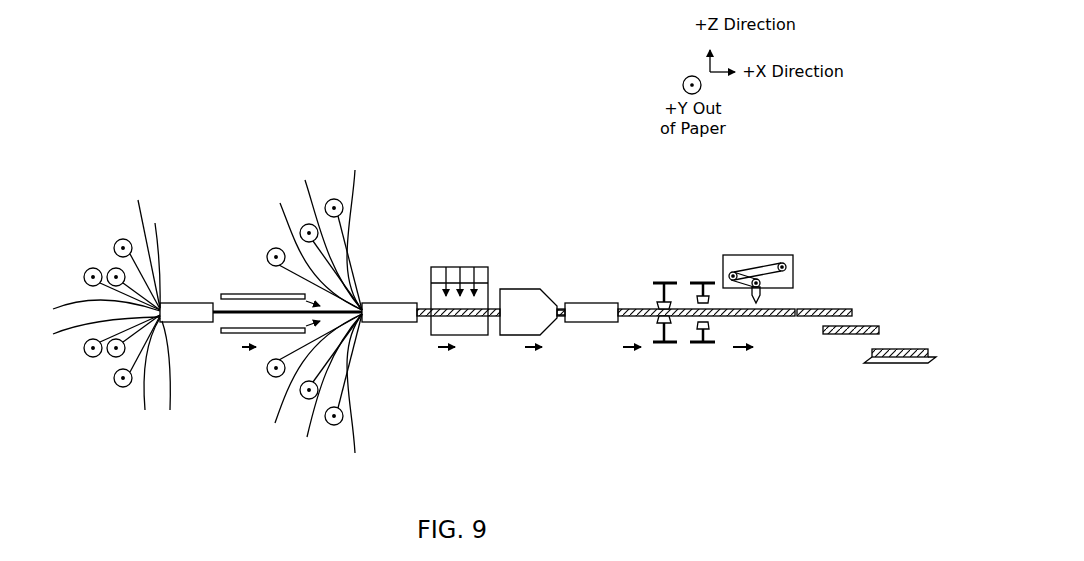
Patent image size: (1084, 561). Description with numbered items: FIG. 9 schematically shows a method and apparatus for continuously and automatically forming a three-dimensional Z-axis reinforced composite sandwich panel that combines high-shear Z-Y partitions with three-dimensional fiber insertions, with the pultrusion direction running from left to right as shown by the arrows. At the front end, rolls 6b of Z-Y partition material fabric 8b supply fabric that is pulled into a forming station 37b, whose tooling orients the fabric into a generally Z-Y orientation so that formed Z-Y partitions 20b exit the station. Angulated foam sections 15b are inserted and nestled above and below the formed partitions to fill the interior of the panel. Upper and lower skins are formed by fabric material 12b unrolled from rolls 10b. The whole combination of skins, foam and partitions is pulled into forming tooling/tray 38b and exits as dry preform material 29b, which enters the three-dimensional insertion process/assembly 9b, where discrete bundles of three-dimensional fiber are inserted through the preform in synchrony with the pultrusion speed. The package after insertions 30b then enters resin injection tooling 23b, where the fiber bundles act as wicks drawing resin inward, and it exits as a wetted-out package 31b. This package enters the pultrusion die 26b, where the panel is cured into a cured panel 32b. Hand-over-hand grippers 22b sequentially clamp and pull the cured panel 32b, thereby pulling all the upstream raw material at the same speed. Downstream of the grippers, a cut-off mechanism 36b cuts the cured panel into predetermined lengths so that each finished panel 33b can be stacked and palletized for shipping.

The rolls 6b is at (123, 238).
The Z-Y partition material fabric 8b is at (105, 304).
The forming station 37b is at (203, 303).
The formed Z-Y partitions 20b is at (238, 315).
The foam sections 15b is at (230, 294).
The rolls 10b is at (268, 250).
The fabric material 12b is at (315, 312).
The forming tooling/tray 38b is at (388, 325).
The dry preform material 29b is at (427, 305).
The 3D insertion process/assembly 9b is at (457, 267).
The package after insertions 30b is at (525, 288).
The resin injection tooling 23b is at (557, 309).
The wetted-out package 31b is at (561, 307).
The pultrusion die 26b is at (578, 303).
The cured panel 32b is at (626, 307).
The grippers 22b is at (701, 282).
The cutter 36b is at (766, 255).
The finished panel 33b is at (823, 310).